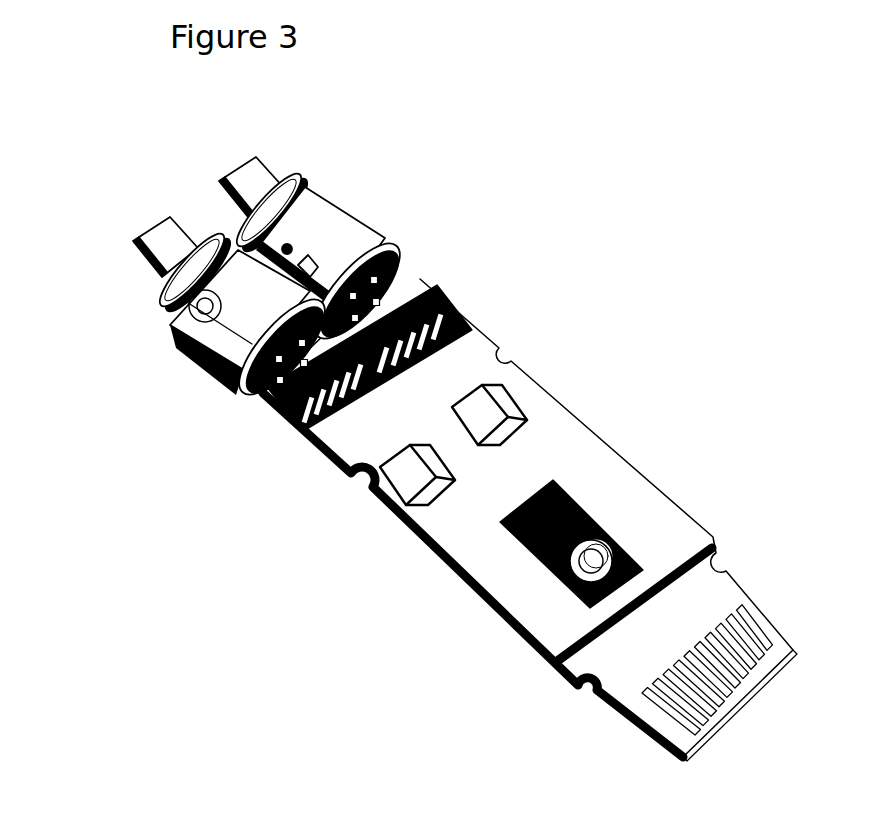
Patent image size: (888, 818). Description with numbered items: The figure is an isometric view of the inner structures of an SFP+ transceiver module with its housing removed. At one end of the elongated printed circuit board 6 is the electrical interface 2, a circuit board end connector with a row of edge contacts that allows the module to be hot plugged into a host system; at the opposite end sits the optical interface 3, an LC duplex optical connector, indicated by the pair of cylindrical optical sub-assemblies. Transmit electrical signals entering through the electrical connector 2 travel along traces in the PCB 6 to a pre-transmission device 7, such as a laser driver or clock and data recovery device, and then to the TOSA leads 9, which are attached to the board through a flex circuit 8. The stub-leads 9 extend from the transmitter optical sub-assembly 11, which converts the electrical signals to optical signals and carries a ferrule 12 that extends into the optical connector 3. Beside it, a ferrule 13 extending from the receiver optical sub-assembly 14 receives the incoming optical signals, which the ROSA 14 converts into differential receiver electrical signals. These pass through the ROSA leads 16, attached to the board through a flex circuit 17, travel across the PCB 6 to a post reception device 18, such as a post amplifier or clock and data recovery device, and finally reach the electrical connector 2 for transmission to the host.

The electrical interface 2 is at (742, 681).
The optical interface 3 is at (202, 202).
The printed circuit board 6 is at (608, 492).
The pre-transmission device 7 is at (492, 418).
The flex circuit 8 is at (395, 299).
The TOSA leads 9 is at (391, 286).
The transmitter optical sub-assembly 11 is at (327, 223).
The ferrule 12 is at (248, 172).
The ferrule 13 is at (153, 236).
The receiver optical sub-assembly 14 is at (185, 342).
The ROSA leads 16 is at (253, 379).
The flex circuit 17 is at (258, 403).
The post reception device 18 is at (418, 482).